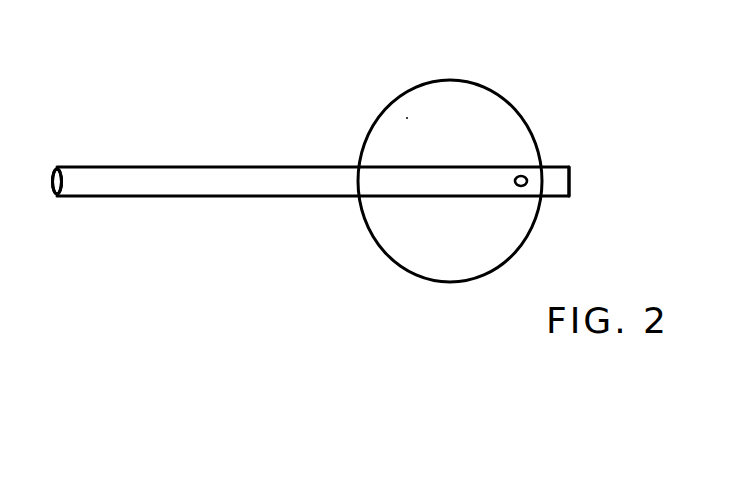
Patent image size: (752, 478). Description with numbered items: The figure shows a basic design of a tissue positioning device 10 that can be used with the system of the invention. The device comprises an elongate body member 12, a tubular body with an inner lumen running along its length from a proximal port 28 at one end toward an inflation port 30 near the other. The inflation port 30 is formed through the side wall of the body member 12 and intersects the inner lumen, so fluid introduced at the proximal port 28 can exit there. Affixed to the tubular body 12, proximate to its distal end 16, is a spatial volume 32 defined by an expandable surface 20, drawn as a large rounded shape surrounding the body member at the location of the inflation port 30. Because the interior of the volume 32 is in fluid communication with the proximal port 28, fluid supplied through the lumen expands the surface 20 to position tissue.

The tissue positioning device 10 is at (206, 74).
The elongate body member 12 is at (290, 167).
The distal end 16 is at (571, 186).
The expandable surface 20 is at (450, 80).
The proximal port 28 is at (52, 193).
The inflation port 30 is at (527, 182).
The spatial volume 32 is at (407, 118).